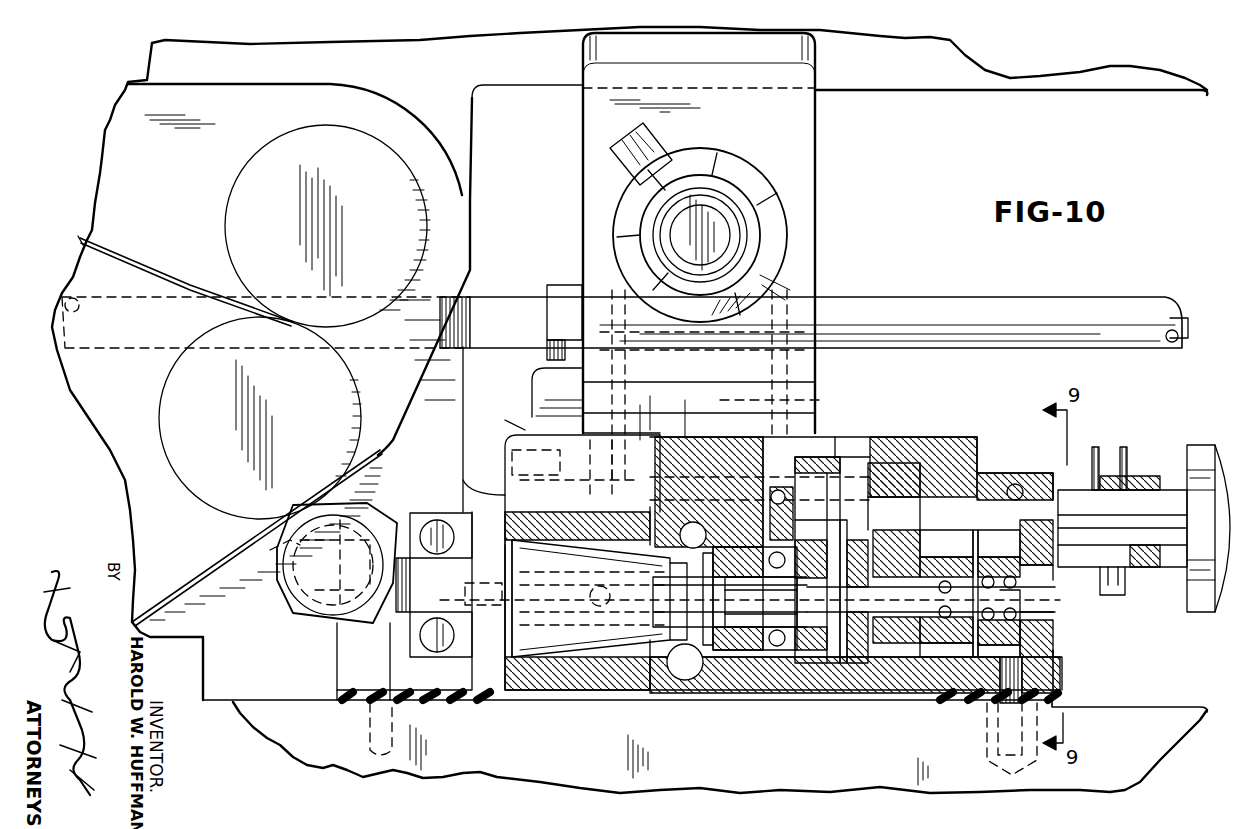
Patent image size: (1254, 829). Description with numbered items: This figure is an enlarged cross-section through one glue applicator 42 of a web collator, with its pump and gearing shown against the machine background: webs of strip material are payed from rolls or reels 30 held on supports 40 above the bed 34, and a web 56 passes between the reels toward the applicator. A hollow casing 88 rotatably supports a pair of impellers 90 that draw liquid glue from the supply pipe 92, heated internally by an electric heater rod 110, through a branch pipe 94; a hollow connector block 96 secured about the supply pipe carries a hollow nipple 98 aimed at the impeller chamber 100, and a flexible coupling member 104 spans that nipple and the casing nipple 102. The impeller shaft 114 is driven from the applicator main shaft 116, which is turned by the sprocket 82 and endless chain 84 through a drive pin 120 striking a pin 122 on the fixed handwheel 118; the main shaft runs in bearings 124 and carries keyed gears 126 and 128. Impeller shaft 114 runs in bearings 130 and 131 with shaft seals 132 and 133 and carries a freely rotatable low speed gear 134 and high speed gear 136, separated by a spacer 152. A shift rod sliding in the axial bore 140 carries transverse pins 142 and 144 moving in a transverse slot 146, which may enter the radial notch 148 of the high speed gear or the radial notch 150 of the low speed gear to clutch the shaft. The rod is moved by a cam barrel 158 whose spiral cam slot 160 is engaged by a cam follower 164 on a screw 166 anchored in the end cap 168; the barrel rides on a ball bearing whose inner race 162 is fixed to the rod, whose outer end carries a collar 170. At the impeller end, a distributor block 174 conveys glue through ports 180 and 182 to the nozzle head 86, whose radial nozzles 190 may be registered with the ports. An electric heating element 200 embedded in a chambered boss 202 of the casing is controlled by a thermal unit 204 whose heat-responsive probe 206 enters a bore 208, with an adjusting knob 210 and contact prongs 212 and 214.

The rolls or reels 30 is at (226, 205).
The bed 34 is at (570, 776).
The supports 40 is at (468, 92).
The glue applicator 42 is at (590, 690).
The web 56 is at (116, 252).
The sprocket 82 is at (1124, 447).
The endless chain 84 is at (1092, 450).
The nozzle head 86 is at (312, 612).
The hollow casing 88 is at (640, 690).
The impeller 90 is at (556, 660).
The supply pipe 92 is at (882, 296).
The branch pipe 94 is at (498, 448).
The hollow connector block 96 is at (562, 285).
The hollow nipple 98 is at (548, 360).
The impeller chamber 100 is at (562, 660).
The nipple 102 is at (512, 527).
The coupling member 104 is at (532, 398).
The electric heater rod 110 is at (1180, 316).
The impeller shaft 114 is at (685, 662).
The applicator main shaft 116 is at (1128, 580).
The handwheel 118 is at (1208, 612).
The drive pin 120 is at (1125, 490).
The pin 122 is at (1150, 490).
The bearings 124 is at (777, 488).
The gear 126 is at (843, 431).
The gear 128 is at (905, 462).
The bearing 130 is at (760, 650).
The bearing 131 is at (985, 657).
The shaft seal 132 is at (712, 650).
The shaft seal 133 is at (980, 556).
The low speed gear 134 is at (790, 650).
The high speed gear 136 is at (935, 657).
The axial bore 140 is at (948, 557).
The transverse pin 142 is at (843, 663).
The transverse pin 144 is at (975, 657).
The transverse slot 146 is at (882, 497).
The radial notch 148 is at (895, 542).
The radial notch 150 is at (842, 525).
The spacer 152 is at (858, 663).
The cam barrel 158 is at (1048, 620).
The cam slot 160 is at (1065, 640).
The inner race 162 is at (1048, 595).
The cam follower 164 is at (1048, 645).
The screw 166 is at (990, 695).
The end cap 168 is at (1062, 667).
The collar 170 is at (1045, 565).
The distributor block 174 is at (336, 672).
The port 180 is at (245, 547).
The port 182 is at (280, 558).
The nozzles 190 is at (318, 500).
The electric heating element 200 is at (520, 483).
The chambered boss 202 is at (470, 490).
The thermal unit 204 is at (812, 196).
The heat-responsive probe 206 is at (690, 500).
The bore 208 is at (672, 520).
The adjusting knob 210 is at (790, 214).
The contact prong 212 is at (668, 404).
The contact prong 214 is at (748, 404).